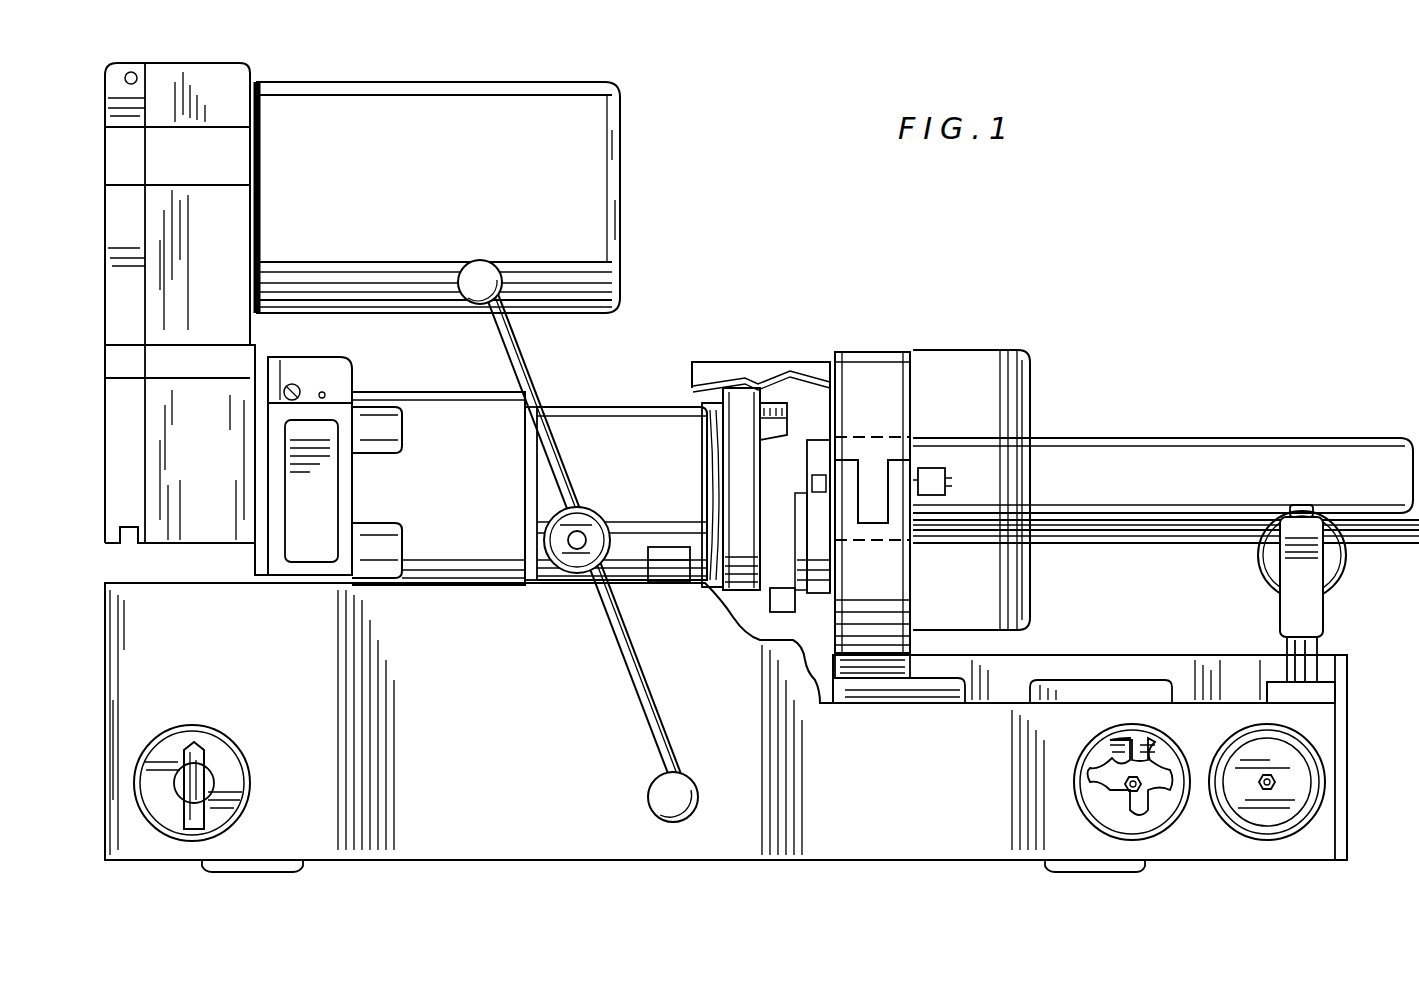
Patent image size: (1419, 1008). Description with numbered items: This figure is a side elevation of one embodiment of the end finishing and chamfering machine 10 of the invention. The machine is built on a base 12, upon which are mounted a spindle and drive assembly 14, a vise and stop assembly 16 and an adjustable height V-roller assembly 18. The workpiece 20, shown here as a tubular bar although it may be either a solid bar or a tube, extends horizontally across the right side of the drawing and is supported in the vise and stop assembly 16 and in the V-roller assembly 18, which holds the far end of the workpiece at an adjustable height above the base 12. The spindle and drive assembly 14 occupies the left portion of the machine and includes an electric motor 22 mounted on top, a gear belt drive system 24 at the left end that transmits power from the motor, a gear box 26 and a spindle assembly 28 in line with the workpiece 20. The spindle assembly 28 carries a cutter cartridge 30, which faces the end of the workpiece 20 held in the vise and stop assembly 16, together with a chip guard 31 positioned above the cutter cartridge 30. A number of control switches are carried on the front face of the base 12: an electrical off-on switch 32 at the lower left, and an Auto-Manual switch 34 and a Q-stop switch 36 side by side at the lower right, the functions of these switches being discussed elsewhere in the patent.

The end finishing and chamfering machine 10 is at (985, 298).
The base 12 is at (1345, 725).
The spindle and drive assembly 14 is at (590, 541).
The vise and stop assembly 16 is at (870, 356).
The adjustable height V-roller assembly 18 is at (1325, 616).
The workpiece 20 is at (1166, 490).
The electric motor 22 is at (422, 208).
The gear belt drive system 24 is at (240, 78).
The gear box 26 is at (300, 542).
The spindle assembly 28 is at (444, 488).
The cutter cartridge 30 is at (745, 387).
The chip guard 31 is at (707, 362).
The electrical off-on switch 32 is at (175, 823).
The Auto-Manual switch 34 is at (1155, 822).
The Q-stop switch 36 is at (1305, 775).